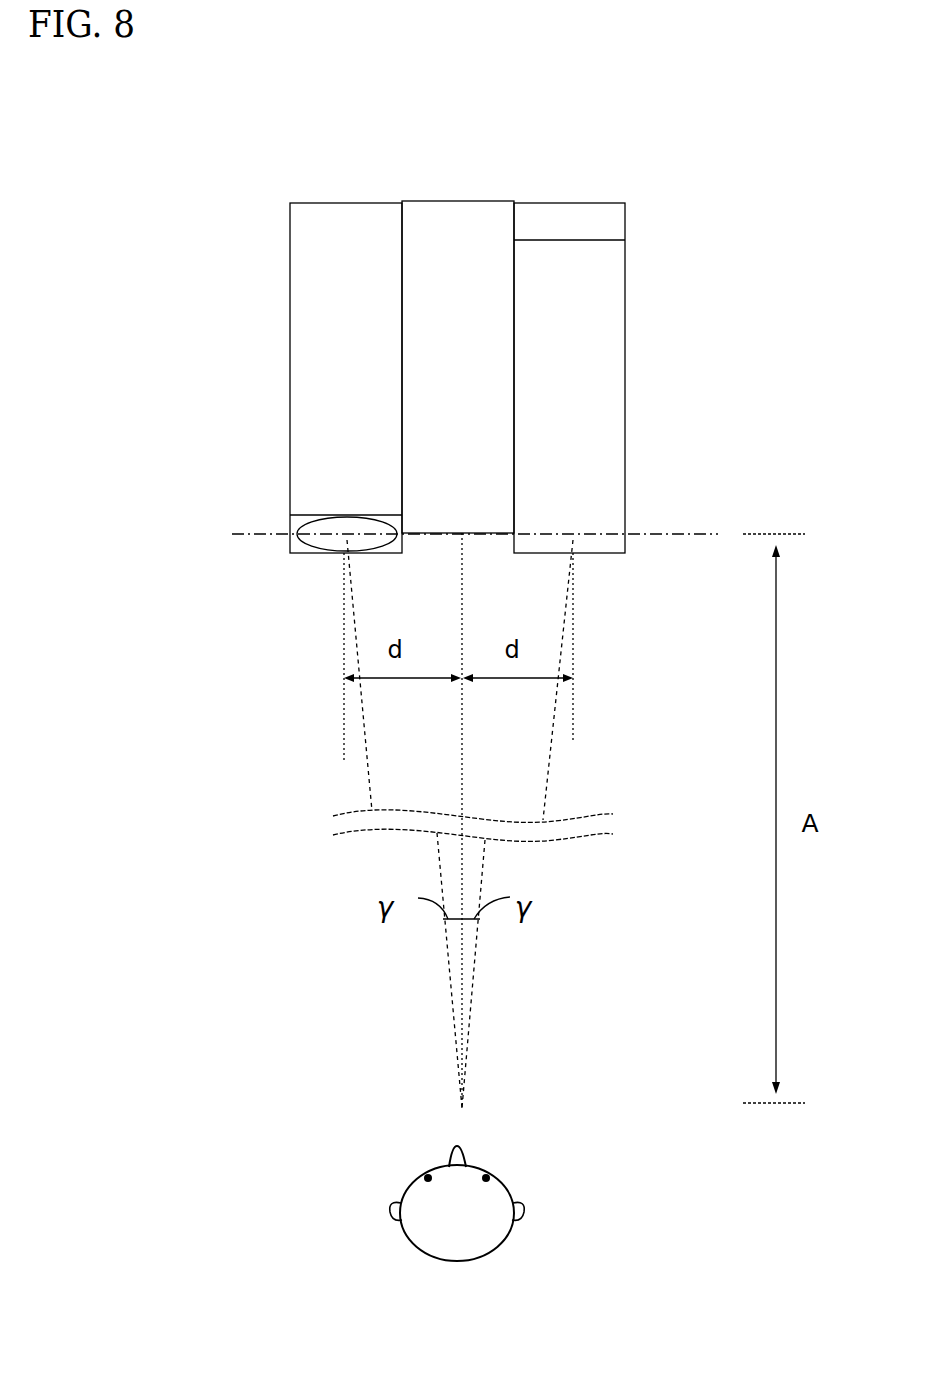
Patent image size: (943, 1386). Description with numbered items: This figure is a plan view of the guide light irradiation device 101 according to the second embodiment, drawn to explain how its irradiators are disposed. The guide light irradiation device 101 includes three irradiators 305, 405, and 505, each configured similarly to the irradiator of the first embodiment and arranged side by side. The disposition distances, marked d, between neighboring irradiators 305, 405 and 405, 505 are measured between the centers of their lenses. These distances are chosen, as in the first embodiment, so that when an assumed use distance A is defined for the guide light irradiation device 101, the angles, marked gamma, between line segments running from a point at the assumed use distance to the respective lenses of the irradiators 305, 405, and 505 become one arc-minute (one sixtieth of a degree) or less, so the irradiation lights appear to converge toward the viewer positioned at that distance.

The guide light irradiation device 101 is at (198, 286).
The irradiator 305 is at (318, 203).
The irradiator 405 is at (441, 201).
The irradiator 505 is at (568, 203).